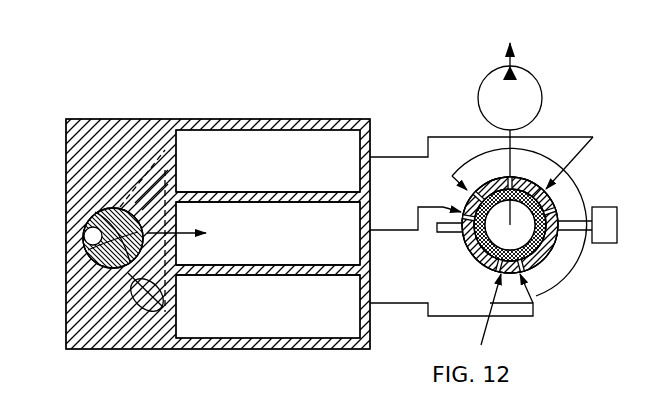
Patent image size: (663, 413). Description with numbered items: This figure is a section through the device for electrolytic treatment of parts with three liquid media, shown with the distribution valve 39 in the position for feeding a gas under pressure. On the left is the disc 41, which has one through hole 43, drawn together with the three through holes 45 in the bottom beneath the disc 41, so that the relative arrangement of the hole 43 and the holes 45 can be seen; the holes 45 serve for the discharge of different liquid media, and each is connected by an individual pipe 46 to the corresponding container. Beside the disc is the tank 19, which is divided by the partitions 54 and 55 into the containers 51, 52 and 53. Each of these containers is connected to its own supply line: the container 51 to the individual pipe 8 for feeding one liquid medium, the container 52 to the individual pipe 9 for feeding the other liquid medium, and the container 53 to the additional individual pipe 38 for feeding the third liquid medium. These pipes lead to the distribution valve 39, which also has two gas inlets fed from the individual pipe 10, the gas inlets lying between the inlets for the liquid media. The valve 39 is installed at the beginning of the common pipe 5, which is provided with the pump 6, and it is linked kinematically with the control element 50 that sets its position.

The common pipe 5 is at (514, 132).
The pump 6 is at (532, 91).
The individual pipe 8 is at (410, 157).
The individual pipe 9 is at (418, 228).
The individual pipe 10 is at (483, 338).
The tank 19 is at (364, 118).
The additional individual pipe 38 is at (412, 303).
The distribution valve 39 is at (561, 207).
The disc 41 is at (67, 290).
The through hole 43 is at (95, 221).
The through holes 45 is at (88, 248).
The individual pipe 46 is at (178, 253).
The control element 50 is at (597, 244).
The container 51 is at (340, 147).
The container 52 is at (340, 218).
The container 53 is at (343, 295).
The partition 54 is at (201, 199).
The partition 55 is at (203, 272).